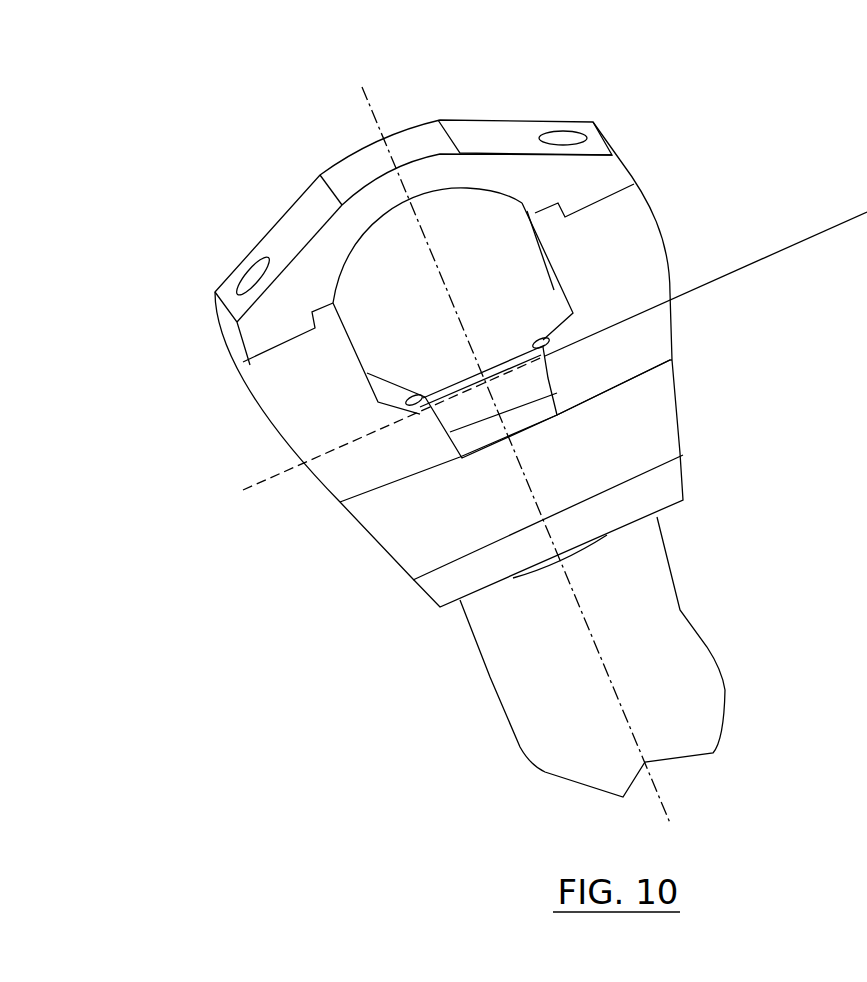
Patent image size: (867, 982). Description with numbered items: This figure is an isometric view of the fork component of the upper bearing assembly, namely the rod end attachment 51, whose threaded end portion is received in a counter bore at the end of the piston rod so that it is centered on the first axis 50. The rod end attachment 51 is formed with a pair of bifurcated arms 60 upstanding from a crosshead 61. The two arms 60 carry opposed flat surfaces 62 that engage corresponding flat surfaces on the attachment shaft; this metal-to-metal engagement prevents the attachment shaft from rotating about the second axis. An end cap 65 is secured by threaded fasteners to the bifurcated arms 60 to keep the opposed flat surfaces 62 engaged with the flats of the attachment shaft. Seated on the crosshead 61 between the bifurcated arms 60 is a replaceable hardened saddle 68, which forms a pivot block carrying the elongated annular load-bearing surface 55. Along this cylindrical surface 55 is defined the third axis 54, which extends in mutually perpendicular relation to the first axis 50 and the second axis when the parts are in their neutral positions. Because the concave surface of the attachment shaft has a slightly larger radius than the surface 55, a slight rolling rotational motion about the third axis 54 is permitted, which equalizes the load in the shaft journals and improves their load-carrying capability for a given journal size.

The first axis 50 is at (667, 805).
The rod end attachment 51 is at (668, 570).
The third axis 54 is at (730, 273).
The elongated annular load-bearing surface 55 is at (523, 397).
The bifurcated arms 60 is at (633, 222).
The crosshead 61 is at (667, 430).
The opposed flat surfaces 62 is at (360, 350).
The end cap 65 is at (488, 120).
The replaceable hardened saddle 68 is at (517, 417).